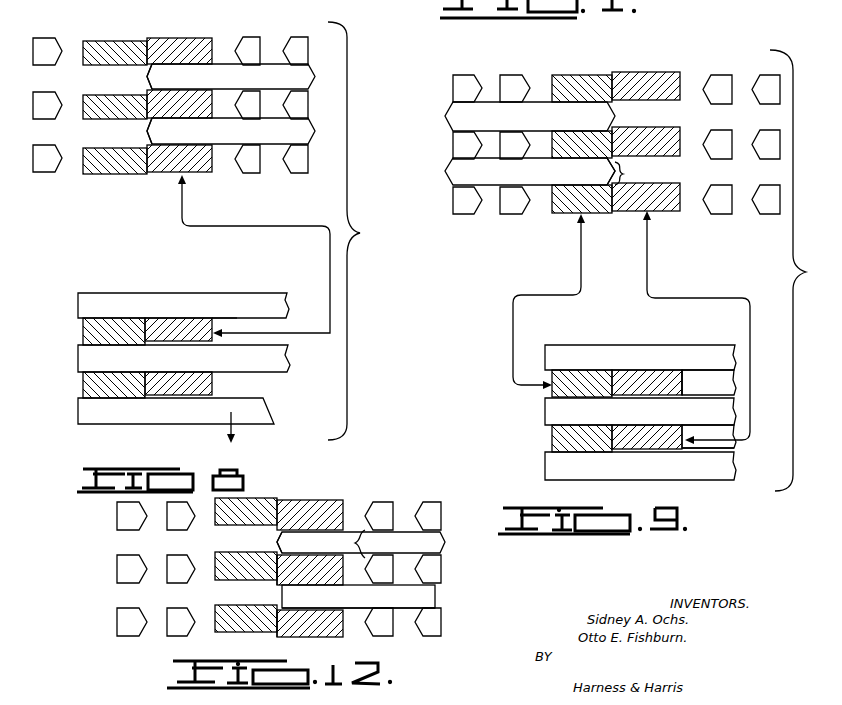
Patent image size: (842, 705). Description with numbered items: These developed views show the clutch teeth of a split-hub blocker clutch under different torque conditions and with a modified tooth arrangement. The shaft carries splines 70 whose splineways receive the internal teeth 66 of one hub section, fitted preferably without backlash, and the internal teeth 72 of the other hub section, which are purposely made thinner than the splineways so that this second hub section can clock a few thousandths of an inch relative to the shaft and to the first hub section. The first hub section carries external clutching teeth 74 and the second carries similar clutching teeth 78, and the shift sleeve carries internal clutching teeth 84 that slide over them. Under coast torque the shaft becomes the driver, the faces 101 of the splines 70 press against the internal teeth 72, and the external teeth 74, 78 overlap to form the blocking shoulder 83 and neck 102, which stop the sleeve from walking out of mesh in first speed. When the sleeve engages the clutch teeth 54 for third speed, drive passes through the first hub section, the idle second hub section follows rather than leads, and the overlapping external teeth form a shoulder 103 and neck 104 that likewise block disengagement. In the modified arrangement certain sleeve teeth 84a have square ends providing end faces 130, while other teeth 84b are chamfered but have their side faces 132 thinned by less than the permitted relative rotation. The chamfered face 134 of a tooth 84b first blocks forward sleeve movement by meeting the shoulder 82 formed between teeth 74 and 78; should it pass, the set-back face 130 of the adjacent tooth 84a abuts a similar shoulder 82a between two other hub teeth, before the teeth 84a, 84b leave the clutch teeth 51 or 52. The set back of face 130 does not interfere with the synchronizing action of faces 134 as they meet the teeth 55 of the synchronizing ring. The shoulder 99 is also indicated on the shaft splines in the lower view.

In FIG. 8, the clutch teeth 51 is at (293, 43).
In FIG. 9, the clutch teeth 51 is at (770, 207).
In FIG. 12, the clutch teeth 51 is at (428, 508).
In FIG. 8, the conductor strip 52 is at (245, 42).
In FIG. 9, the conductor strip 52 is at (718, 78).
In FIG. 12, the conductor strip 52 is at (378, 507).
In FIG. 9, the clutch teeth 54 is at (460, 86).
In FIG. 12, the clutch teeth 54 is at (125, 513).
In FIG. 8, the teeth of the synchronizing ring 55 is at (45, 45).
In FIG. 9, the teeth of the synchronizing ring 55 is at (518, 206).
In FIG. 12, the teeth of the synchronizing ring 55 is at (178, 630).
In FIG. 8, the internal teeth of hub section 66 is at (97, 327).
In FIG. 9, the internal teeth of hub section 66 is at (576, 370).
In FIG. 9, the splines of the shaft 70 is at (706, 366).
In FIG. 8, the internal teeth of hub section 72 is at (176, 327).
In FIG. 9, the internal teeth of hub section 72 is at (665, 358).
In FIG. 8, the external clutching teeth 74 is at (113, 45).
In FIG. 9, the external clutching teeth 74 is at (580, 80).
In FIG. 12, the external clutching teeth 74 is at (258, 505).
In FIG. 8, the clutching teeth 78 is at (184, 44).
In FIG. 9, the clutching teeth 78 is at (652, 80).
In FIG. 12, the clutching teeth 78 is at (322, 505).
In FIG. 12, the blocking shoulder 82 is at (275, 560).
In FIG. 12, the blocking shoulder 82a is at (276, 633).
In FIG. 8, the blocking shoulder 83 is at (153, 71).
In FIG. 8, the internal clutching teeth 84 is at (272, 82).
In FIG. 9, the internal clutching teeth 84 is at (535, 122).
In FIG. 12, the sleeve teeth with square ends 84a is at (432, 590).
In FIG. 12, the sleeve teeth with thinned side faces 84b is at (412, 540).
In FIG. 9, the shoulder 99 is at (702, 449).
In FIG. 8, the faces of the splines 101 is at (233, 318).
In FIG. 9, the faces of the splines 101 is at (706, 370).
In FIG. 8, the neck 102 is at (147, 131).
In FIG. 9, the shoulder 103 is at (612, 185).
In FIG. 9, the neck 104 is at (624, 173).
In FIG. 12, the end faces 130 is at (432, 605).
In FIG. 12, the side faces 132 is at (341, 544).
In FIG. 12, the chamfered face 134 is at (277, 548).